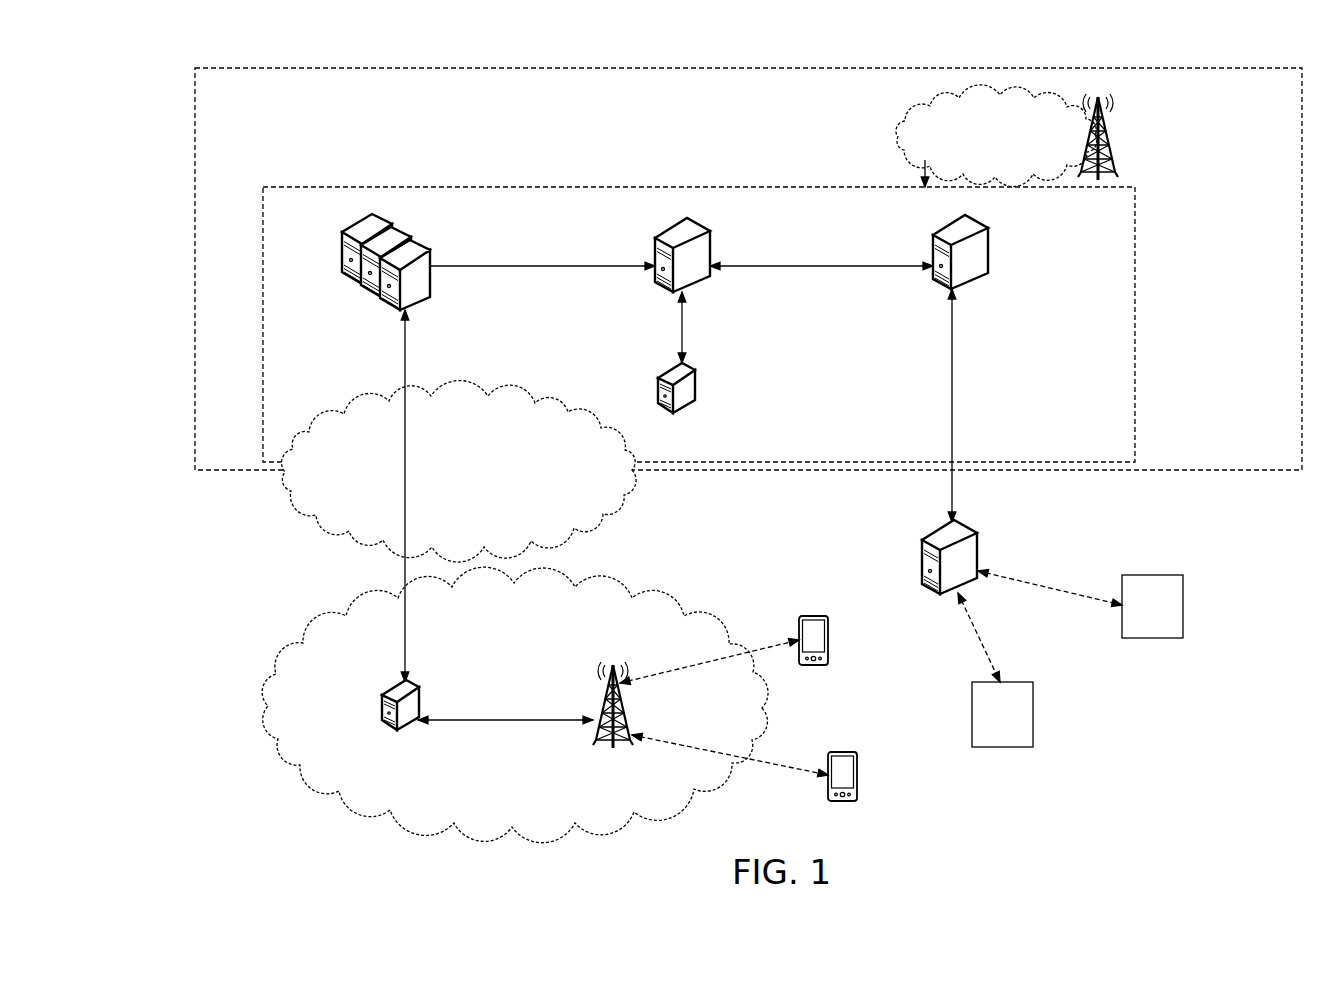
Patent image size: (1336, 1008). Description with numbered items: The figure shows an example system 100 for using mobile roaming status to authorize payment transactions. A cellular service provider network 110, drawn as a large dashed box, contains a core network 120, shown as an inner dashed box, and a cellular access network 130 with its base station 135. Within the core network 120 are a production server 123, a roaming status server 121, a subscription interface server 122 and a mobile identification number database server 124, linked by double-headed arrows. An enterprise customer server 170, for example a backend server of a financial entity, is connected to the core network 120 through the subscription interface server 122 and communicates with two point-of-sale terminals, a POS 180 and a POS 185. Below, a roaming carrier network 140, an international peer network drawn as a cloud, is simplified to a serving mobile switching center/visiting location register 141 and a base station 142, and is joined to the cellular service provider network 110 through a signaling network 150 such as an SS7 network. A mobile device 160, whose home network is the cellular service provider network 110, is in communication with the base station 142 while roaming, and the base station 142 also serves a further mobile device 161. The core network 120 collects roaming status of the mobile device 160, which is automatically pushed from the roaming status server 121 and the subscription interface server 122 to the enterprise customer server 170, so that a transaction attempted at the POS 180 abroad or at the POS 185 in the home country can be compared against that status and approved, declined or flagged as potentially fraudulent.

The system 100 is at (153, 62).
The cellular service provider network 110 is at (236, 101).
The core network 120 is at (302, 221).
The roaming status server 121 is at (710, 242).
The subscription interface server 122 is at (985, 240).
The production server 123 is at (430, 252).
The mobile identification number database (MIND) server 124 is at (695, 378).
The cellular access network 130 is at (1017, 148).
The base station 135 is at (1120, 162).
The roaming carrier network 140 is at (536, 793).
The serving mobile switching center (MSC)/visiting location register (VLR) 141 is at (418, 695).
The base station 142 is at (630, 716).
The signaling network 150 is at (477, 481).
The mobile device 160 is at (836, 752).
The mobile device 161 is at (806, 616).
The enterprise customer server 170 is at (972, 545).
The point-of-sale terminal (POS) 180 is at (1020, 725).
The point-of-sale terminal (POS) 185 is at (1170, 616).